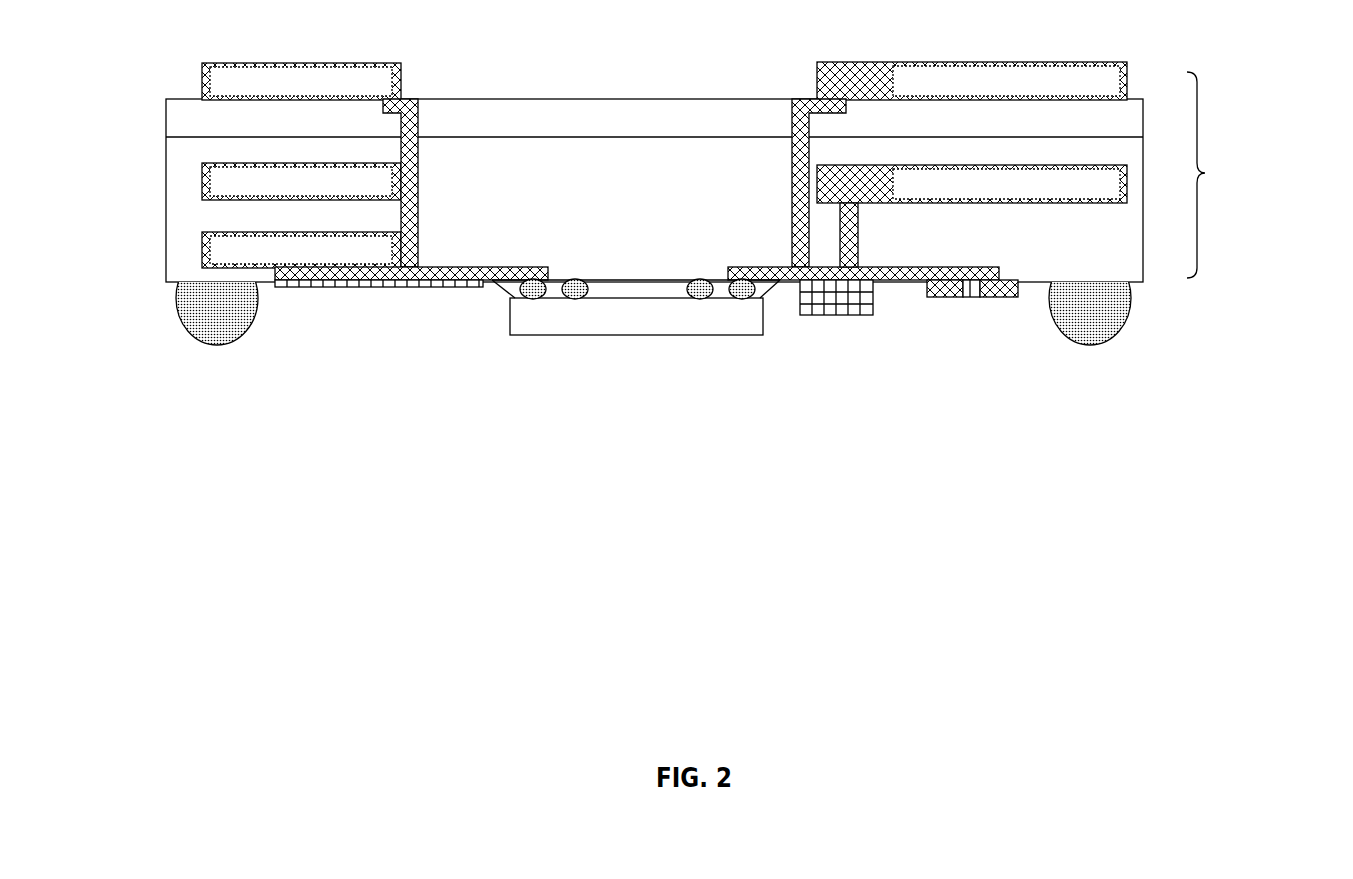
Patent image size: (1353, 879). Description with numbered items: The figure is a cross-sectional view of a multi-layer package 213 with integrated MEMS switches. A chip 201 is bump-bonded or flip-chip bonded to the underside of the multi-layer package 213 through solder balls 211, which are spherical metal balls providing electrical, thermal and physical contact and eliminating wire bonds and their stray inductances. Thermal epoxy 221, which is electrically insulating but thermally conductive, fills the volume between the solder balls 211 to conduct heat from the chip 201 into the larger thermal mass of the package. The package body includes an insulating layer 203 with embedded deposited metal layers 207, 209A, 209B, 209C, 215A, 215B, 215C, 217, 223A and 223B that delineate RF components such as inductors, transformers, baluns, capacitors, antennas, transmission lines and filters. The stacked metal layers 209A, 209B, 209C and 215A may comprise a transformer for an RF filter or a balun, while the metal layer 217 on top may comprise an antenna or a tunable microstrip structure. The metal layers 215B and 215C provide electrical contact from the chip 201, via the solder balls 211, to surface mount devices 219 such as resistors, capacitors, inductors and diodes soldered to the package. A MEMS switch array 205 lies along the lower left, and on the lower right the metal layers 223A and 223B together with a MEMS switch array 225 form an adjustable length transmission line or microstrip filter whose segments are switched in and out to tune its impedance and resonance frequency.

The chip 201 is at (682, 326).
The insulating layer 203 is at (672, 128).
The MEMS switch array 205 is at (365, 287).
The metal layer 207 is at (1050, 193).
The metal layer 209A is at (390, 92).
The metal layer 209B is at (390, 191).
The metal layer 209C is at (390, 260).
The solder balls 211 is at (1040, 334).
The multi-layer package 213 is at (1276, 213).
The metal layer 215A is at (418, 210).
The metal layer 215B is at (792, 188).
The metal layer 215C is at (937, 266).
The metal layer 217 is at (1050, 90).
The surface mount devices 219 is at (822, 315).
The thermal epoxy 221 is at (774, 290).
The metal layer 223A is at (935, 297).
The metal layer 223B is at (993, 297).
The MEMS switch array 225 is at (970, 297).